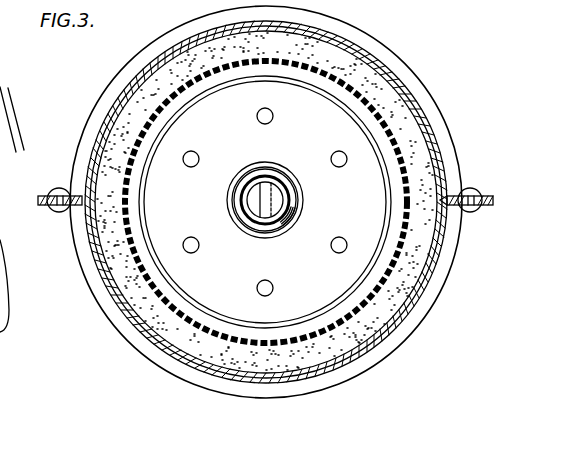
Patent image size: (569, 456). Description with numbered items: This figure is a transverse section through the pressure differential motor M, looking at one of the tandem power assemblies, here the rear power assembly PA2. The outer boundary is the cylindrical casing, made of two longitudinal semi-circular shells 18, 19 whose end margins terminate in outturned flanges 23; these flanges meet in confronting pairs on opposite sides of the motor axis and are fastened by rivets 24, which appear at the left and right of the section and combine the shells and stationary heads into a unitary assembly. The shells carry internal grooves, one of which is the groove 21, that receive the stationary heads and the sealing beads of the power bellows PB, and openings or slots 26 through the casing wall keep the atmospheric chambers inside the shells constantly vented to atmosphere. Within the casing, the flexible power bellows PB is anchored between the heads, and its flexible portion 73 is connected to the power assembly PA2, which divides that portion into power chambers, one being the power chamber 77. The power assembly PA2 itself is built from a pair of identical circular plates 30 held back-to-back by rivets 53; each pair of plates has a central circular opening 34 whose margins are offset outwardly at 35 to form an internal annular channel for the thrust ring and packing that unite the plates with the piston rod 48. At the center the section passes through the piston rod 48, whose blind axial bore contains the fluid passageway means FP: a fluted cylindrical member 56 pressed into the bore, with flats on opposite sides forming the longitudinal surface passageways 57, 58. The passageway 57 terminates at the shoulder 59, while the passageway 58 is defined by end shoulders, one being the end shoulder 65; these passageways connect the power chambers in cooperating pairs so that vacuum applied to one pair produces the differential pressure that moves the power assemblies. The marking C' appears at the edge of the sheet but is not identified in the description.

The pressure differential motor M is at (98, 92).
The internal groove 21 is at (456, 142).
The semi-circular shell 18 is at (405, 100).
The semi-circular shell 19 is at (430, 273).
The rear power assembly PA2 is at (150, 331).
The flexible portion of the bellows 73 is at (410, 187).
The power chamber 77 is at (393, 133).
The power bellows PB is at (401, 166).
The circular plate 30 is at (328, 121).
The rivet 53 is at (274, 283).
The fluid passageway means FP is at (258, 174).
The end shoulder 65 is at (283, 180).
The piston rod 48 is at (242, 185).
The shoulder 59 is at (243, 201).
The longitudinal surface passageway 57 is at (250, 208).
The fluted cylindrical member 56 is at (261, 221).
The longitudinal surface passageway 58 is at (280, 211).
The central circular opening 34 is at (293, 195).
The offset 35 is at (303, 208).
The rivet 24 is at (58, 194).
The outturned flange 23 is at (40, 208).
The opening or slot 26 is at (392, 3).
The stray numeral C' is at (554, 10).